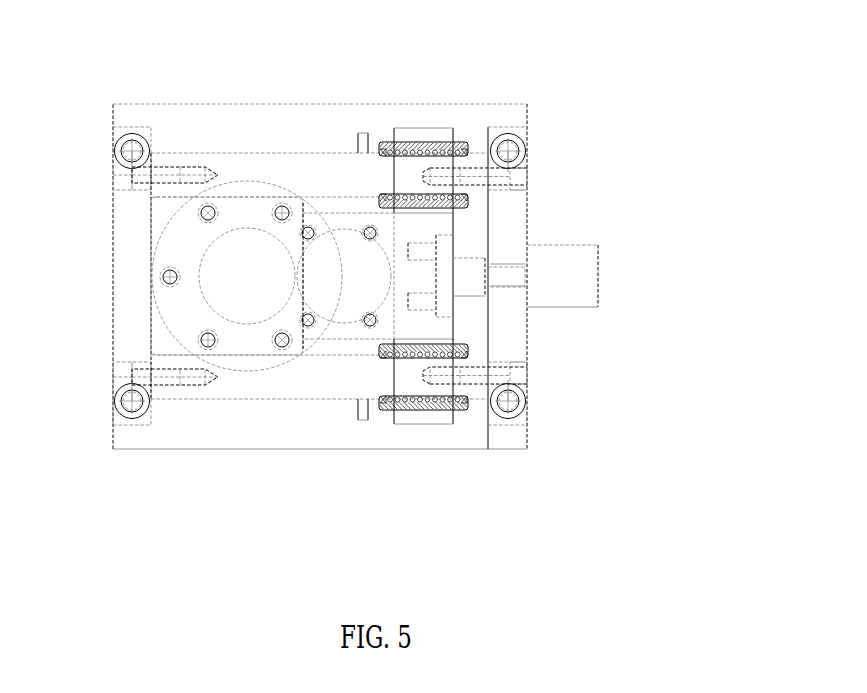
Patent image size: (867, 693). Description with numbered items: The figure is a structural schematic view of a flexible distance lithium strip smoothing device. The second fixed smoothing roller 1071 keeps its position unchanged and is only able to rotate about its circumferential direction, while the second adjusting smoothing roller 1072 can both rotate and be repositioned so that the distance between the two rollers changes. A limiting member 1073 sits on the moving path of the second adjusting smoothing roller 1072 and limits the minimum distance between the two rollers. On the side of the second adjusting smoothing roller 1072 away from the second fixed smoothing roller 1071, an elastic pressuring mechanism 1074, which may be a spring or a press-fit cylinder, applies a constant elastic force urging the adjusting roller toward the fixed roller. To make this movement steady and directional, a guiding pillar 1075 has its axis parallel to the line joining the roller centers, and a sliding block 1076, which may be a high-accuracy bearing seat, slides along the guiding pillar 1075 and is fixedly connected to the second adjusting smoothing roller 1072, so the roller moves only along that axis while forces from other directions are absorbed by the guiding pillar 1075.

The second fixed smoothing roller 1071 is at (247, 253).
The second adjusting smoothing roller 1072 is at (354, 252).
The limiting member 1073 is at (363, 412).
The elastic pressuring mechanism 1074 is at (563, 257).
The guiding pillar 1075 is at (283, 377).
The sliding block 1076 is at (437, 145).